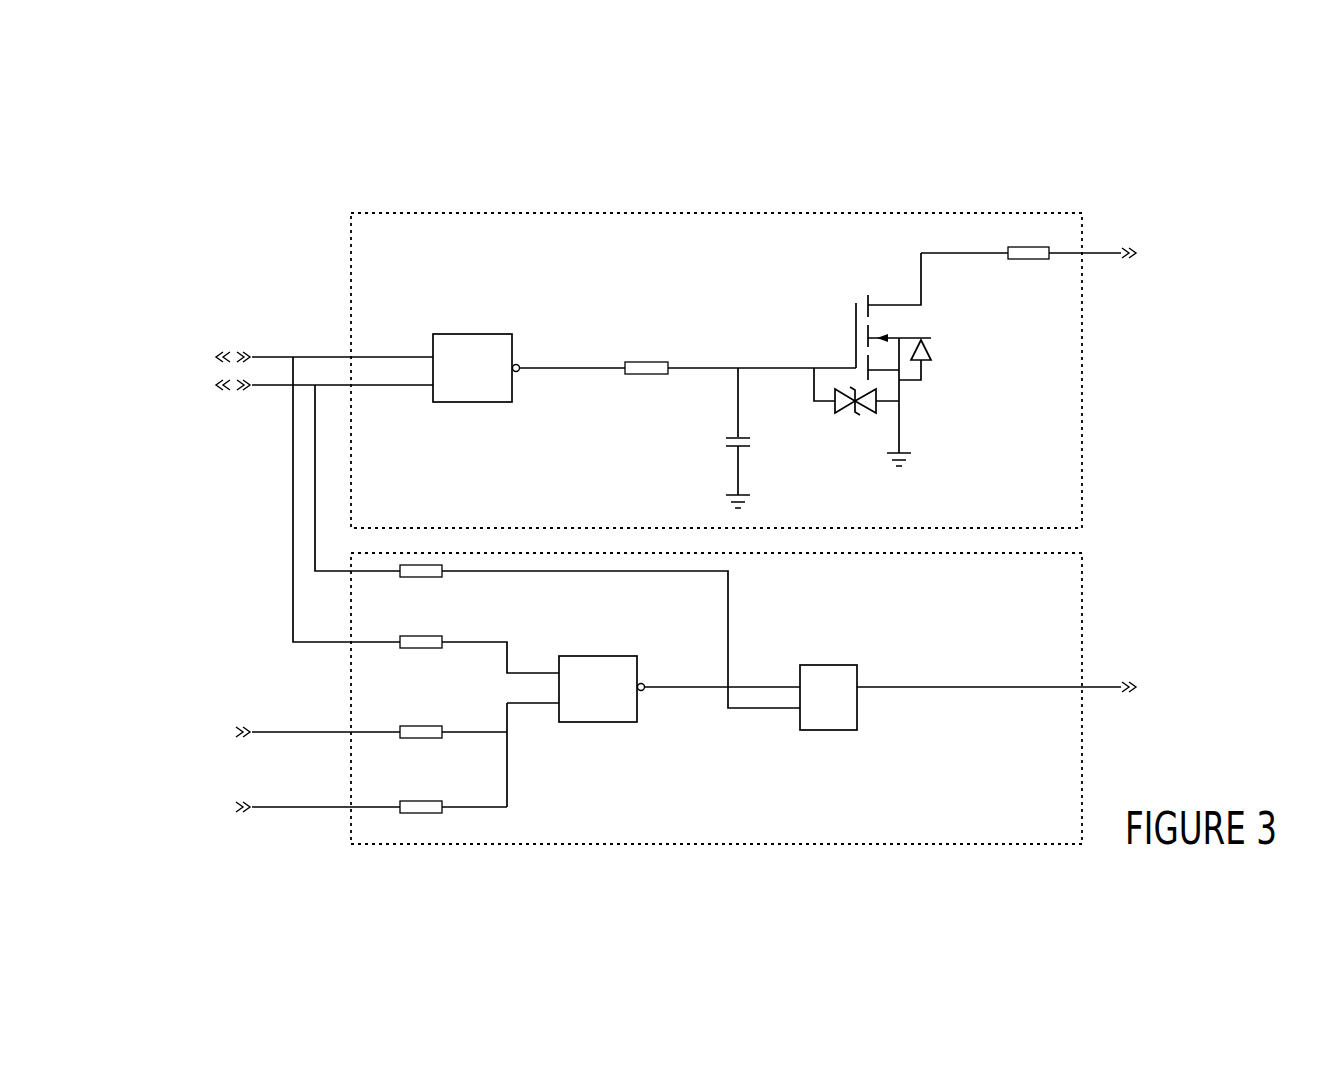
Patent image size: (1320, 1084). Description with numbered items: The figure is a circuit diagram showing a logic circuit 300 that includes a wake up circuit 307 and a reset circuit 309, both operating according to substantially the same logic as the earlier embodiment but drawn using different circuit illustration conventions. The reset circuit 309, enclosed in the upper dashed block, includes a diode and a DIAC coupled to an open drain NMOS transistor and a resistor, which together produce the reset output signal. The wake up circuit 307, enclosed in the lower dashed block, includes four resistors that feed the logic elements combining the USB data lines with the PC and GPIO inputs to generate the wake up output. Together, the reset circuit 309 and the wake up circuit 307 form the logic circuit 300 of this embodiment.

The logic circuit 300 is at (852, 172).
The reset circuit 309 is at (1082, 392).
The wake up circuit 307 is at (1082, 603).